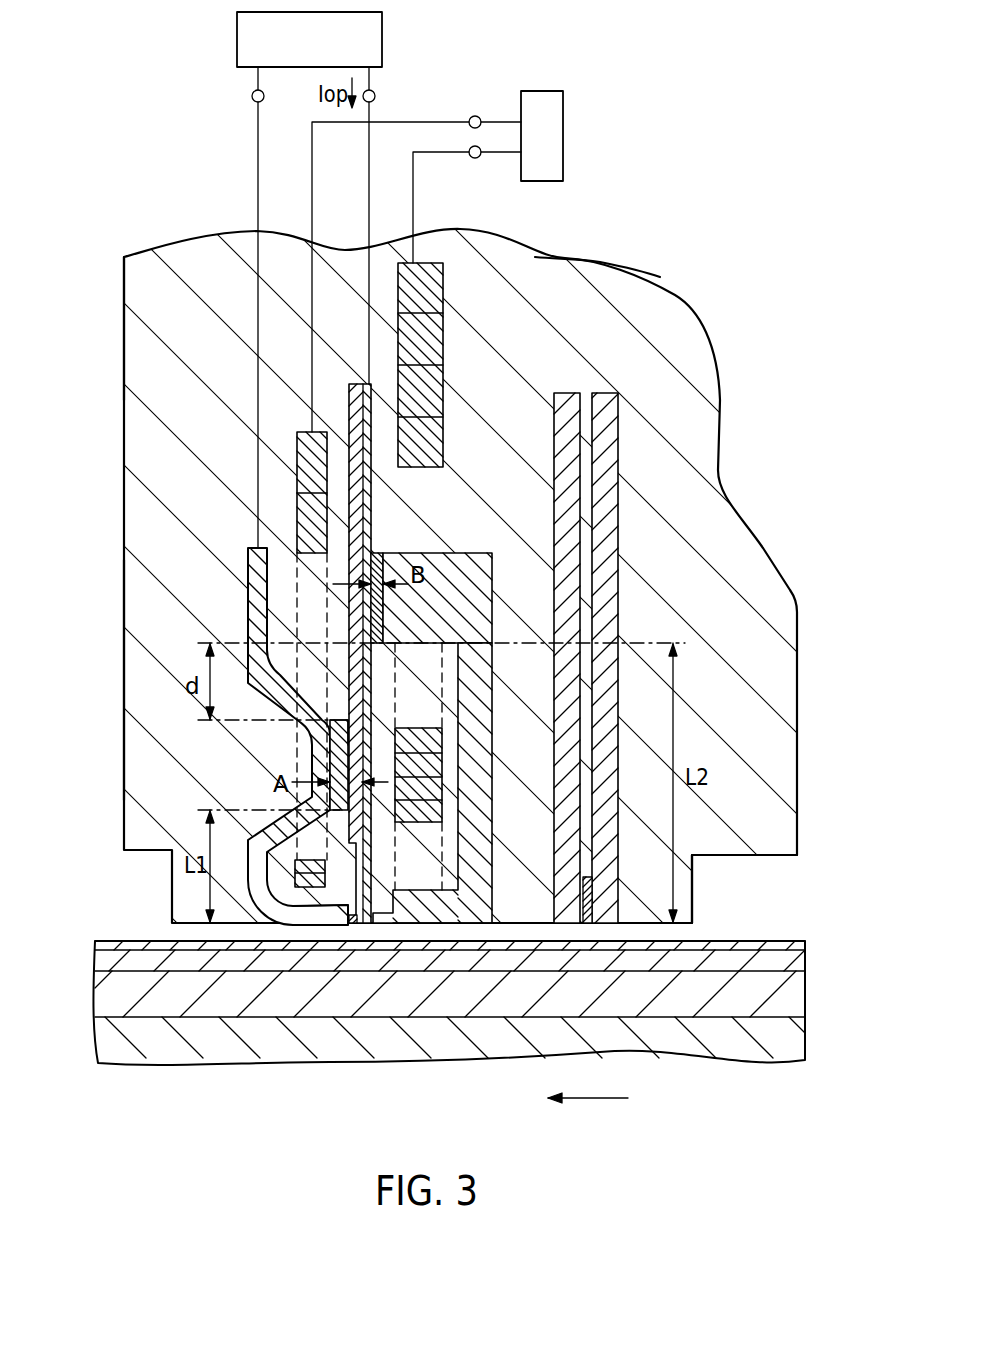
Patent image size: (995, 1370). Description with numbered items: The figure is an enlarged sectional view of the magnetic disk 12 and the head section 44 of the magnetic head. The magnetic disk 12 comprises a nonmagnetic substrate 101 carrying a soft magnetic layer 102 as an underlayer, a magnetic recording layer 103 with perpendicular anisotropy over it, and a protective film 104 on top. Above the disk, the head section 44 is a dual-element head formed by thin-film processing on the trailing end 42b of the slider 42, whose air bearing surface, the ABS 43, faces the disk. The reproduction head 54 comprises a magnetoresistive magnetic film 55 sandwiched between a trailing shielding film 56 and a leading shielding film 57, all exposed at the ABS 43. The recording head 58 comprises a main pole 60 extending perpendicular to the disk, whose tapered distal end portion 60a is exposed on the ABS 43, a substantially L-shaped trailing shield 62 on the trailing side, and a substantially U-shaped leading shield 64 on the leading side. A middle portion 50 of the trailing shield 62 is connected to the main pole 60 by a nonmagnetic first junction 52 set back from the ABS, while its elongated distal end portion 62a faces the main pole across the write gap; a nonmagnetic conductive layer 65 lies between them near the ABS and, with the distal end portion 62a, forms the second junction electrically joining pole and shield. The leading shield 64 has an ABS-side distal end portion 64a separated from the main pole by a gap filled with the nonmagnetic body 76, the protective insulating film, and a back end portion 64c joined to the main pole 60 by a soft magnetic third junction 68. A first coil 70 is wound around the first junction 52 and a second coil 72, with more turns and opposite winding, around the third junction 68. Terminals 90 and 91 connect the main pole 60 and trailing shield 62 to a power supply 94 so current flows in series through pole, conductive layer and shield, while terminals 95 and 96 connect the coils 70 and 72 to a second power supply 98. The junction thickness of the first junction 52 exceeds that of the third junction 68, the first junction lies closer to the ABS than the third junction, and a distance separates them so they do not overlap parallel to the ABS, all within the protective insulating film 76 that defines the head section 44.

The magnetic disk 12 is at (414, 1039).
The slider 42 is at (696, 368).
The trailing end of the slider 42b is at (123, 674).
The ABS 43 is at (735, 858).
The head section 44 is at (597, 272).
The middle portion of the trailing shield 50 is at (340, 796).
The first junction 52 is at (340, 752).
The reproduction head 54 is at (603, 631).
The magnetic film 55 is at (593, 881).
The shielding film 56 is at (602, 603).
The shielding film 57 is at (568, 559).
The recording head 58 is at (487, 228).
The main pole 60 is at (367, 747).
The distal end portion of the main pole 60a is at (368, 925).
The trailing shield 62 is at (247, 622).
The distal end portion of the trailing shield 62a is at (296, 926).
The leading shield 64 is at (486, 680).
The distal end portion of the leading shield 64a is at (462, 925).
The end portion of the leading shield 64c is at (430, 618).
The nonmagnetic conductive layer 65 is at (366, 925).
The third junction 68 is at (380, 562).
The first coil 70 is at (300, 526).
The second coil 72 is at (440, 384).
The protective insulating film 76 is at (128, 265).
The terminal 90 is at (375, 96).
The terminal 91 is at (252, 98).
The power supply 94 is at (237, 44).
The terminal 95 is at (476, 115).
The terminal 96 is at (476, 158).
The second power supply 98 is at (563, 110).
The substrate 101 is at (97, 1040).
The soft magnetic layer 102 is at (95, 988).
The magnetic recording layer 103 is at (96, 961).
The protective film 104 is at (96, 944).